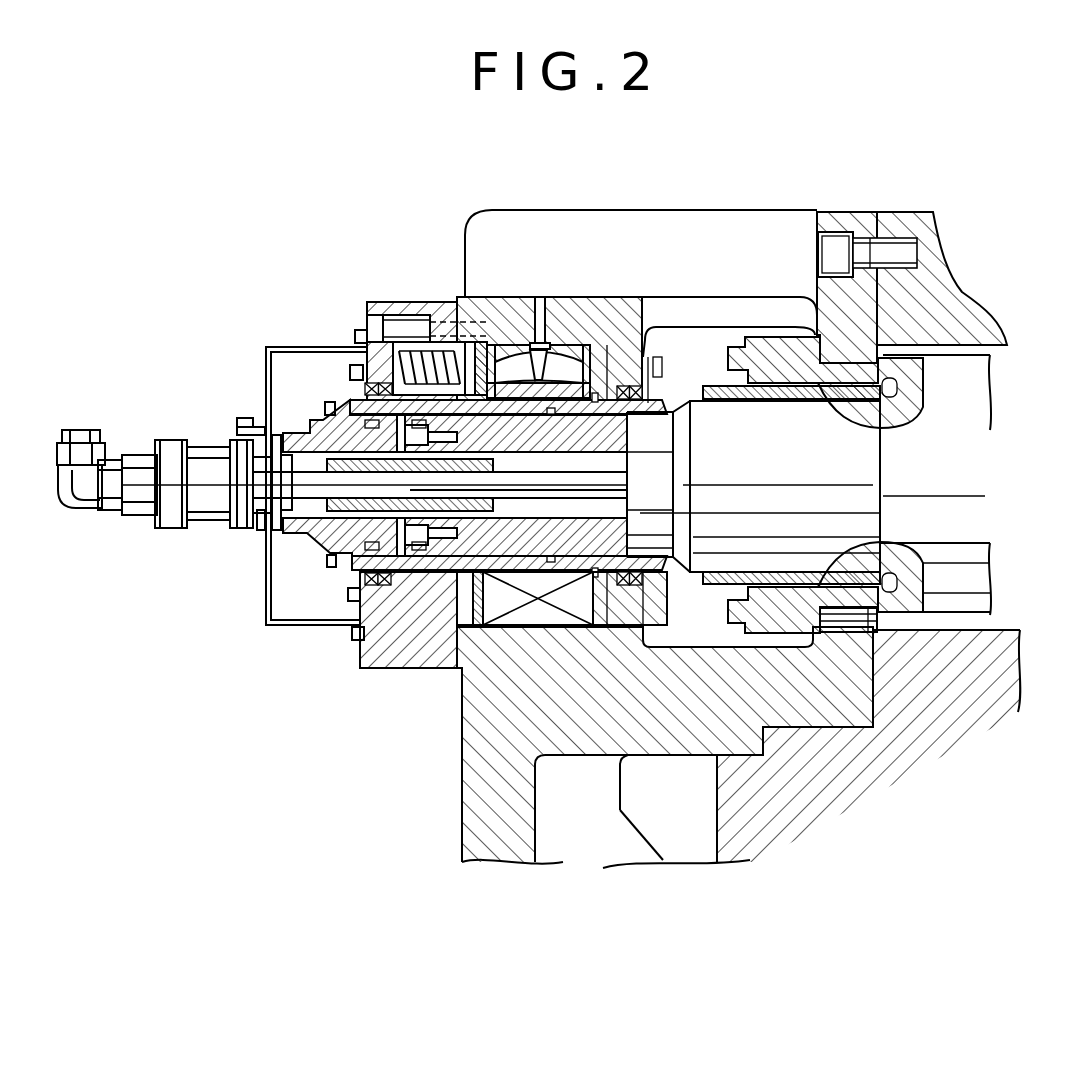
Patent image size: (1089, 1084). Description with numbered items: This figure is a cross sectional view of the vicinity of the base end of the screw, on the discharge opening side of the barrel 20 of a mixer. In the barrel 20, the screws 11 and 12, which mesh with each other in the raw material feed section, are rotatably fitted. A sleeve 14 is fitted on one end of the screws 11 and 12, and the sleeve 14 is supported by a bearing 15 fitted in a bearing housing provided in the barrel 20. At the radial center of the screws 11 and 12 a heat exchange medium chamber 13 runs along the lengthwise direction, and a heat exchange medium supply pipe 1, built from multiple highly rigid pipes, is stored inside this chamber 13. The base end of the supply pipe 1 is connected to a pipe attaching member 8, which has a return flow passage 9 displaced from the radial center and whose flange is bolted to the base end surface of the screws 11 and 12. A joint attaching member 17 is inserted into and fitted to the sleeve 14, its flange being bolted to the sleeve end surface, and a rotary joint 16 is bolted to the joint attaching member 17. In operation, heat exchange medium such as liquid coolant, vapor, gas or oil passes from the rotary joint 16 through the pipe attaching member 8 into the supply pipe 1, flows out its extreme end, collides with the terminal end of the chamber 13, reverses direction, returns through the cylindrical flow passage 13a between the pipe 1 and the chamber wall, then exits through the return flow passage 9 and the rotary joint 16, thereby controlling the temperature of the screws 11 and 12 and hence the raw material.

The heat exchange medium supply pipe 1 is at (590, 477).
The pipe attaching member 8 is at (357, 447).
The return flow passage 9 is at (425, 518).
The screw 11 is at (888, 537).
The screw 12 is at (907, 617).
The heat exchange medium chamber 13 is at (645, 689).
The cylindrical flow passage 13a is at (588, 515).
The sleeve 14 is at (420, 560).
The bearing 15 is at (560, 297).
The rotary joint 16 is at (142, 468).
The joint attaching member 17 is at (333, 550).
The barrel 20 is at (520, 210).